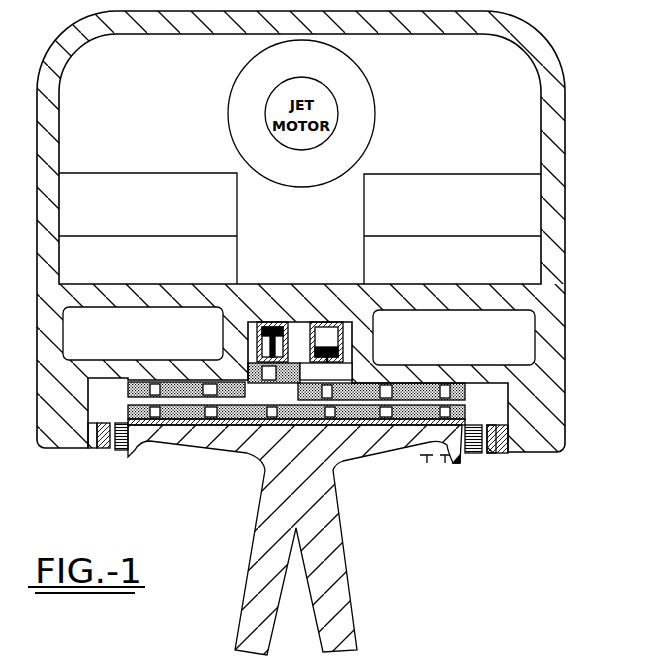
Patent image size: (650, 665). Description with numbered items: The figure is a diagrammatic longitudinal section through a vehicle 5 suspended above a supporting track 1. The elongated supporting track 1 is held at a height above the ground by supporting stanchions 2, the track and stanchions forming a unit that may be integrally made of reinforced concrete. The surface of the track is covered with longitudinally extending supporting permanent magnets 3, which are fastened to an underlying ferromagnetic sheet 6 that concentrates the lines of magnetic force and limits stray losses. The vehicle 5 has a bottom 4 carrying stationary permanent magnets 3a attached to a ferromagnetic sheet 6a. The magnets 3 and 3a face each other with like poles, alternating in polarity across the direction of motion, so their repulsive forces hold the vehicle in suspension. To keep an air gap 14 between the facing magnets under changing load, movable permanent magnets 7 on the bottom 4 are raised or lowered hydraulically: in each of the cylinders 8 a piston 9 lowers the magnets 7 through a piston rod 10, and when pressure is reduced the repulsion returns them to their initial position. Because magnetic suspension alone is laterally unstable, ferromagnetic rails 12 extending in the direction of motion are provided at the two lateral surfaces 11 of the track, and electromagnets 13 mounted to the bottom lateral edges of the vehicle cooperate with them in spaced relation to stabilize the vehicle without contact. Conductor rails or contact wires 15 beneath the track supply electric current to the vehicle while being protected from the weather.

The supporting track 1 is at (362, 454).
The supporting stanchions 2 is at (341, 571).
The supporting permanent magnets 3 is at (305, 394).
The stationary permanent magnets 3a is at (414, 385).
The bottom 4 is at (480, 385).
The vehicle 5 is at (562, 92).
The ferromagnetic sheet 6 is at (216, 423).
The ferromagnetic sheet 6a is at (450, 385).
The movable permanent magnets 7 is at (255, 383).
The cylinders 8 is at (255, 329).
The piston 9 is at (267, 322).
The piston rod 10 is at (255, 348).
The lateral surfaces 11 is at (134, 447).
The rails 12 is at (115, 451).
The electromagnets 13 is at (98, 450).
The air gap 14 is at (140, 403).
The conductor rails or contact wires 15 is at (446, 458).